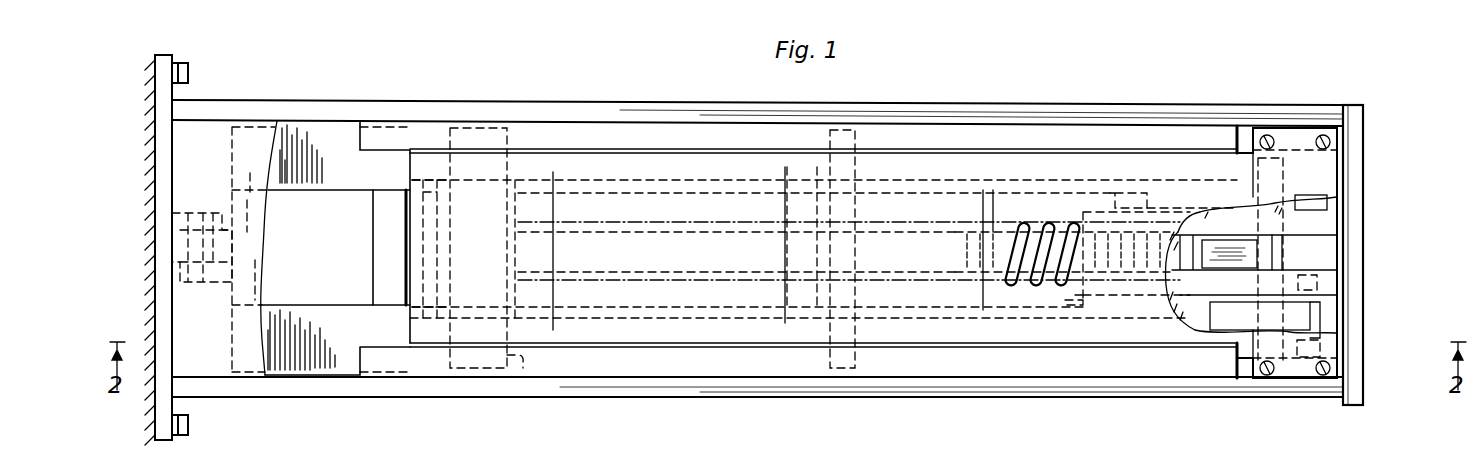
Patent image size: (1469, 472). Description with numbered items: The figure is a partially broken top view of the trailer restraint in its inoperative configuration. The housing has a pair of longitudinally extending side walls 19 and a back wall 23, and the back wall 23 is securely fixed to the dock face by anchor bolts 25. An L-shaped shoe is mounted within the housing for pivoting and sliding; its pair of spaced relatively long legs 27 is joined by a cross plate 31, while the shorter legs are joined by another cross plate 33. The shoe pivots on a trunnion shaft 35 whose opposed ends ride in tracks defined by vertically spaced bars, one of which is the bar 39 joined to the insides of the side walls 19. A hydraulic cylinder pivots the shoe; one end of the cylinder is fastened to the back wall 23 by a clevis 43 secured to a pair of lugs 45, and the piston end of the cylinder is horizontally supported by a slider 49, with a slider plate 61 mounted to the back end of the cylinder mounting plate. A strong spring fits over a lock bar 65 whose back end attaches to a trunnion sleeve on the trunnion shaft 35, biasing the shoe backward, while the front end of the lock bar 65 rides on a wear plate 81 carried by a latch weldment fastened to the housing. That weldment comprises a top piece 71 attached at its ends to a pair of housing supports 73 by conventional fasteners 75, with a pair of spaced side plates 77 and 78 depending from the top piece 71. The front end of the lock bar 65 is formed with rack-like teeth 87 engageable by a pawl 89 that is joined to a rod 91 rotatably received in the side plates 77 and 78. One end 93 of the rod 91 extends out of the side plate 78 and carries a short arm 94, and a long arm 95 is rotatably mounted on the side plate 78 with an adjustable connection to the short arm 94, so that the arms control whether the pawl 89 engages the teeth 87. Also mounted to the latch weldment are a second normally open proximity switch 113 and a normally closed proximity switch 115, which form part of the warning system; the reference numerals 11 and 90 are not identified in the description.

The latch member 11 is at (1095, 305).
The side walls 19 is at (647, 103).
The back wall 23 is at (174, 410).
The anchor bolts 25 is at (190, 72).
The long legs 27 is at (720, 190).
The cross plate 31 is at (1005, 300).
The cross plate 33 is at (450, 185).
The trunnion shaft 35 is at (520, 368).
The bar 39 is at (435, 357).
The clevis 43 is at (182, 240).
The lugs 45 is at (208, 213).
The slider 49 is at (858, 302).
The slider plate 61 is at (297, 352).
The lock bar 65 is at (945, 232).
The top piece 71 is at (1313, 372).
The housing supports 73 is at (1242, 130).
The fasteners 75 is at (1340, 143).
The side plate 77 is at (1318, 225).
The side plate 78 is at (1325, 292).
The wear plate 81 is at (1320, 250).
The rack-like teeth 87 is at (1180, 228).
The pawl 89 is at (1242, 246).
The retaining pin 90 is at (1318, 276).
The rod 91 is at (1262, 265).
The rod end 93 is at (1272, 370).
The short arm 94 is at (1217, 338).
The long arm 95 is at (1325, 346).
The second normally open proximity switch 113 is at (1325, 193).
The normally closed proximity switch 115 is at (1127, 190).